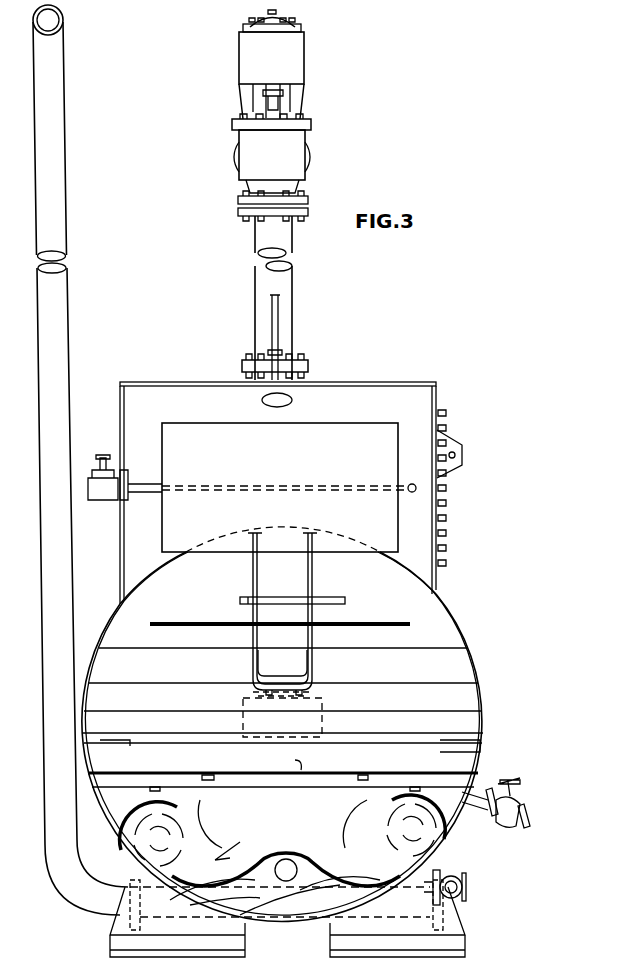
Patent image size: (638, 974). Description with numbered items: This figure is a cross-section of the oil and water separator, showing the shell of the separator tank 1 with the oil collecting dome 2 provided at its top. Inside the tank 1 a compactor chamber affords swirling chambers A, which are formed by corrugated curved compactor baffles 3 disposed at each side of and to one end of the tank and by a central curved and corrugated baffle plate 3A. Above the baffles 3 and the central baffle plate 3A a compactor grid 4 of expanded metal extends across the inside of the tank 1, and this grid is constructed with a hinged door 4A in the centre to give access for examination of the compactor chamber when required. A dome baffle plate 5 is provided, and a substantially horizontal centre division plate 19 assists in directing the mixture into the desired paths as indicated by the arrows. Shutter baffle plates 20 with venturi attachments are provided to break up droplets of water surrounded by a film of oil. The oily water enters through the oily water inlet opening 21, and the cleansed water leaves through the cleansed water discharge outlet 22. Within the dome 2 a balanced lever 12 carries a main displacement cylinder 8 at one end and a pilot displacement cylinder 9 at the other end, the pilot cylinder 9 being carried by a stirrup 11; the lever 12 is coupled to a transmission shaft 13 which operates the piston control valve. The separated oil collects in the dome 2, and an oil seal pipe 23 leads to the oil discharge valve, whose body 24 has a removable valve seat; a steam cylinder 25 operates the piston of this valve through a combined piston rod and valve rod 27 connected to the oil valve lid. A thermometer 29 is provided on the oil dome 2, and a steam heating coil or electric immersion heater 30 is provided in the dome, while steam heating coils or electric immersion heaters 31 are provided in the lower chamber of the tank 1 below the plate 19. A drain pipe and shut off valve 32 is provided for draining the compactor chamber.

The shell of separator tank 1 is at (296, 931).
The oil collecting dome 2 is at (398, 380).
The corrugated curved compactor baffles 3 is at (428, 808).
The central curved and corrugated baffle plate 3A is at (287, 848).
The compactor grid 4 is at (398, 774).
The hinged door 4A is at (284, 761).
The dome baffle plate 5 is at (376, 618).
The main displacement cylinder 8 is at (337, 440).
The pilot displacement cylinder 9 is at (300, 720).
The stirrup 11 is at (312, 672).
The balanced lever 12 is at (256, 584).
The transmission shaft 13 is at (320, 596).
The centre division plate 19 is at (368, 762).
The shutter baffle plates 20 is at (488, 718).
The oily water inlet opening 21 is at (286, 873).
The cleansed water discharge outlet 22 is at (52, 244).
The oil seal pipe 23 is at (279, 241).
The body of oil discharge valve 24 is at (283, 150).
The steam cylinder 25 is at (287, 50).
The combined piston rod and valve rod 27 is at (276, 105).
The thermometer 29 is at (277, 330).
The steam heating coil or electric immersion heater 30 is at (408, 482).
The steam heating coils or electric immersion heaters 31 is at (496, 811).
The drain pipe and shut off valve 32 is at (442, 890).
The swirling chambers A is at (420, 828).